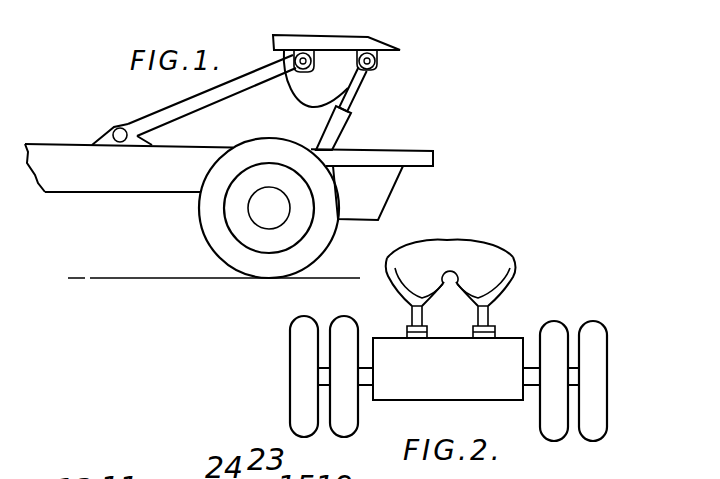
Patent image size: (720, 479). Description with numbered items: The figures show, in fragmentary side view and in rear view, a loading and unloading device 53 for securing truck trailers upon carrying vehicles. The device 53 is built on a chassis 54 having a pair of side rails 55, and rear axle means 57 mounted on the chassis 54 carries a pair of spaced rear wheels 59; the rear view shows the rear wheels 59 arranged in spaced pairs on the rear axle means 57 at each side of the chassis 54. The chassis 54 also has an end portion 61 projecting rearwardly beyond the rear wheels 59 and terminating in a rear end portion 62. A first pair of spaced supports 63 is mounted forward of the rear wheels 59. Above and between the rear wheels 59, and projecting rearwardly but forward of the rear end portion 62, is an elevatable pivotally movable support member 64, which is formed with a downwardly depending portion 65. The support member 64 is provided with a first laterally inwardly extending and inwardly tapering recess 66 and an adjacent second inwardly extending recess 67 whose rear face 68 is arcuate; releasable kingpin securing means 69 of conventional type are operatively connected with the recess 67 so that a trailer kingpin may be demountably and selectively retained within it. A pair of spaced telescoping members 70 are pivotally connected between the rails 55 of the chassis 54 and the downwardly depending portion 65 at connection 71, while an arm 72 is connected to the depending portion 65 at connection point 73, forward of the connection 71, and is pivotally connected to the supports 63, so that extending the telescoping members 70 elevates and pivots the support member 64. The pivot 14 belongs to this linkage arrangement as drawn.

In FIG. 1, the pivot pin 14 is at (117, 128).
In FIG. 1, the loading and unloading device 53 is at (385, 105).
In FIG. 1, the chassis 54 is at (129, 193).
In FIG. 2, the chassis 54 is at (504, 339).
In FIG. 1, the side rails 55 is at (129, 168).
In FIG. 1, the rear axle means 57 is at (269, 208).
In FIG. 2, the rear axle means 57 is at (363, 365).
In FIG. 1, the rear wheels 59 is at (204, 234).
In FIG. 2, the rear wheels 59 is at (290, 368).
In FIG. 1, the end portion 61 is at (393, 151).
In FIG. 1, the rear end portion 62 is at (434, 158).
In FIG. 1, the spaced supports 63 is at (141, 138).
In FIG. 1, the elevatable pivotally movable support member 64 is at (333, 45).
In FIG. 1, the downwardly depending portion 65 is at (317, 78).
In FIG. 2, the first laterally inwardly extending and inwardly tapering recess 66 is at (452, 285).
In FIG. 2, the second inwardly extending recess 67 is at (443, 281).
In FIG. 2, the rear face of recess 68 is at (448, 269).
In FIG. 2, the releasable kingpin securing means 69 is at (458, 285).
In FIG. 1, the telescoping members 70 is at (344, 121).
In FIG. 1, the pivotal connection 71 is at (377, 61).
In FIG. 1, the arm 72 is at (216, 105).
In FIG. 1, the connection point 73 is at (294, 61).